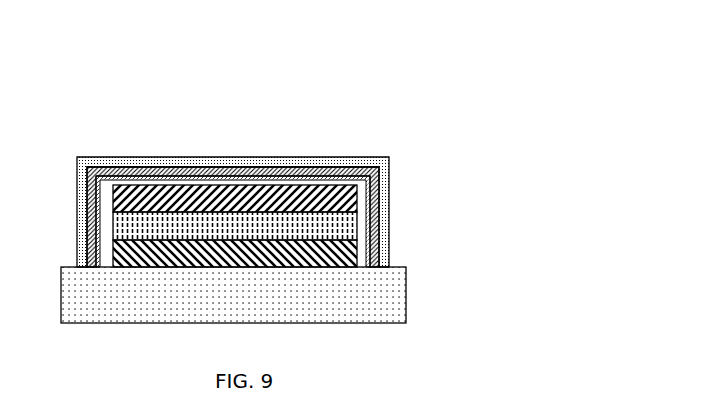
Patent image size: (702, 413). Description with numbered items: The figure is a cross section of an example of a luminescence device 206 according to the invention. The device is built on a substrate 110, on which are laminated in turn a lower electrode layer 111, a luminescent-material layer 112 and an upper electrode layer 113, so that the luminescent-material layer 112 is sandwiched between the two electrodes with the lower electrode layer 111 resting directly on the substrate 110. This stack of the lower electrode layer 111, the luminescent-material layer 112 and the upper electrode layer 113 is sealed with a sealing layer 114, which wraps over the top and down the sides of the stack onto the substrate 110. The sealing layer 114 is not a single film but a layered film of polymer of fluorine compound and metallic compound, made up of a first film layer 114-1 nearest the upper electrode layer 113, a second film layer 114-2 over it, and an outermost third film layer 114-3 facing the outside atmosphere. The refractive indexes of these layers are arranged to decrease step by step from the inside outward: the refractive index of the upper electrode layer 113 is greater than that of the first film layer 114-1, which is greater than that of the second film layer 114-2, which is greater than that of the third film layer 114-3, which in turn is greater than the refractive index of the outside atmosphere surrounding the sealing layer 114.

The luminescence device 206 is at (100, 41).
The substrate 110 is at (403, 302).
The lower electrode layer 111 is at (357, 255).
The luminescent-material layer 112 is at (347, 220).
The upper electrode layer 113 is at (360, 192).
The sealing layer 114 is at (306, 137).
The first film layer of sealing layer 114-1 is at (303, 166).
The second film layer of sealing layer 114-2 is at (255, 164).
The third film layer of sealing layer 114-3 is at (202, 162).